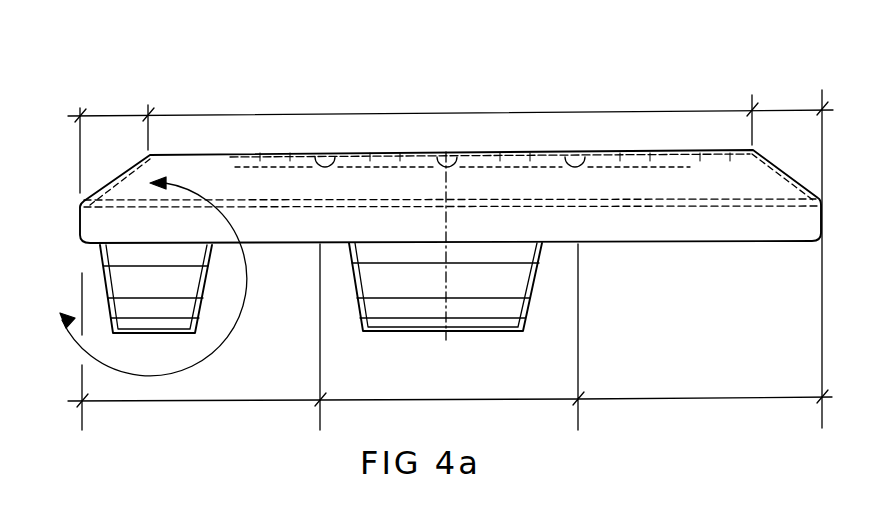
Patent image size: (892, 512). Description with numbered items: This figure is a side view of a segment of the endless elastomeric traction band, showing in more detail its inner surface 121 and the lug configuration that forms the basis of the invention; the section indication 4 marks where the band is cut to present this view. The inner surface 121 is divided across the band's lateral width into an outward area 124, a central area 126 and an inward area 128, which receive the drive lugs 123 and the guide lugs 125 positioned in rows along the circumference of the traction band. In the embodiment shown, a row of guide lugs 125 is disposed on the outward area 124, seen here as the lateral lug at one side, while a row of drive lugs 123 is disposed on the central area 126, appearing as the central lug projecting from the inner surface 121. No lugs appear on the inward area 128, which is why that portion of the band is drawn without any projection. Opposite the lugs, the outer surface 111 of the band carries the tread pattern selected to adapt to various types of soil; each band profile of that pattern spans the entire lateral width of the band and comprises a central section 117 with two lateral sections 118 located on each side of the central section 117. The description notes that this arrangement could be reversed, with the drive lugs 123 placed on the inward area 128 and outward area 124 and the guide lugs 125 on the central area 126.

The section line 4- 4 is at (143, 275).
The outer surface 111 is at (690, 154).
The central section 117 is at (340, 115).
The lateral section 118 is at (98, 114).
The inner surface 121 is at (641, 244).
The drive lug 123 is at (469, 338).
The outward area 124 is at (186, 400).
The guide lug 125 is at (98, 266).
The central area 126 is at (446, 398).
The inward area 128 is at (709, 398).